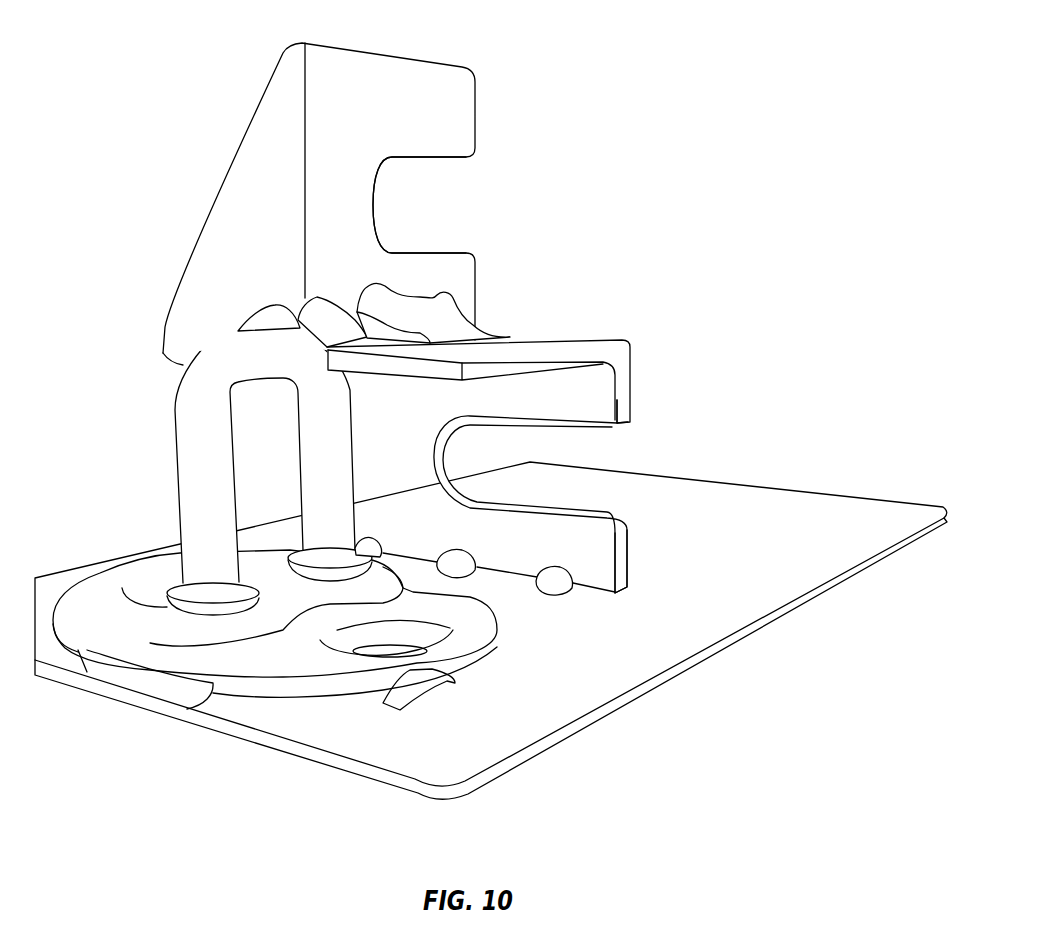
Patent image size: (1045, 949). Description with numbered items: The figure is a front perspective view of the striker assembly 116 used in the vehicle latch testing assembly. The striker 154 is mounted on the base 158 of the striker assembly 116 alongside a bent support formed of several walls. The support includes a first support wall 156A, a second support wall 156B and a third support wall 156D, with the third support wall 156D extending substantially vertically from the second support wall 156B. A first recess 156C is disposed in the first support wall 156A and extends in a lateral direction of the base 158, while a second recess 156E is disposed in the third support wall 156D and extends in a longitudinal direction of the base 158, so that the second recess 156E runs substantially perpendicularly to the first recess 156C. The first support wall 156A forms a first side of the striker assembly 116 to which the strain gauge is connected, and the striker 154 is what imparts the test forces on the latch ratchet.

The striker assembly 116 is at (293, 760).
The striker 154 is at (175, 445).
The first support wall 156A is at (623, 560).
The second support wall 156B is at (535, 346).
The first recess 156C is at (583, 424).
The third support wall 156D is at (450, 75).
The second recess 156E is at (433, 158).
The base 158 is at (571, 727).